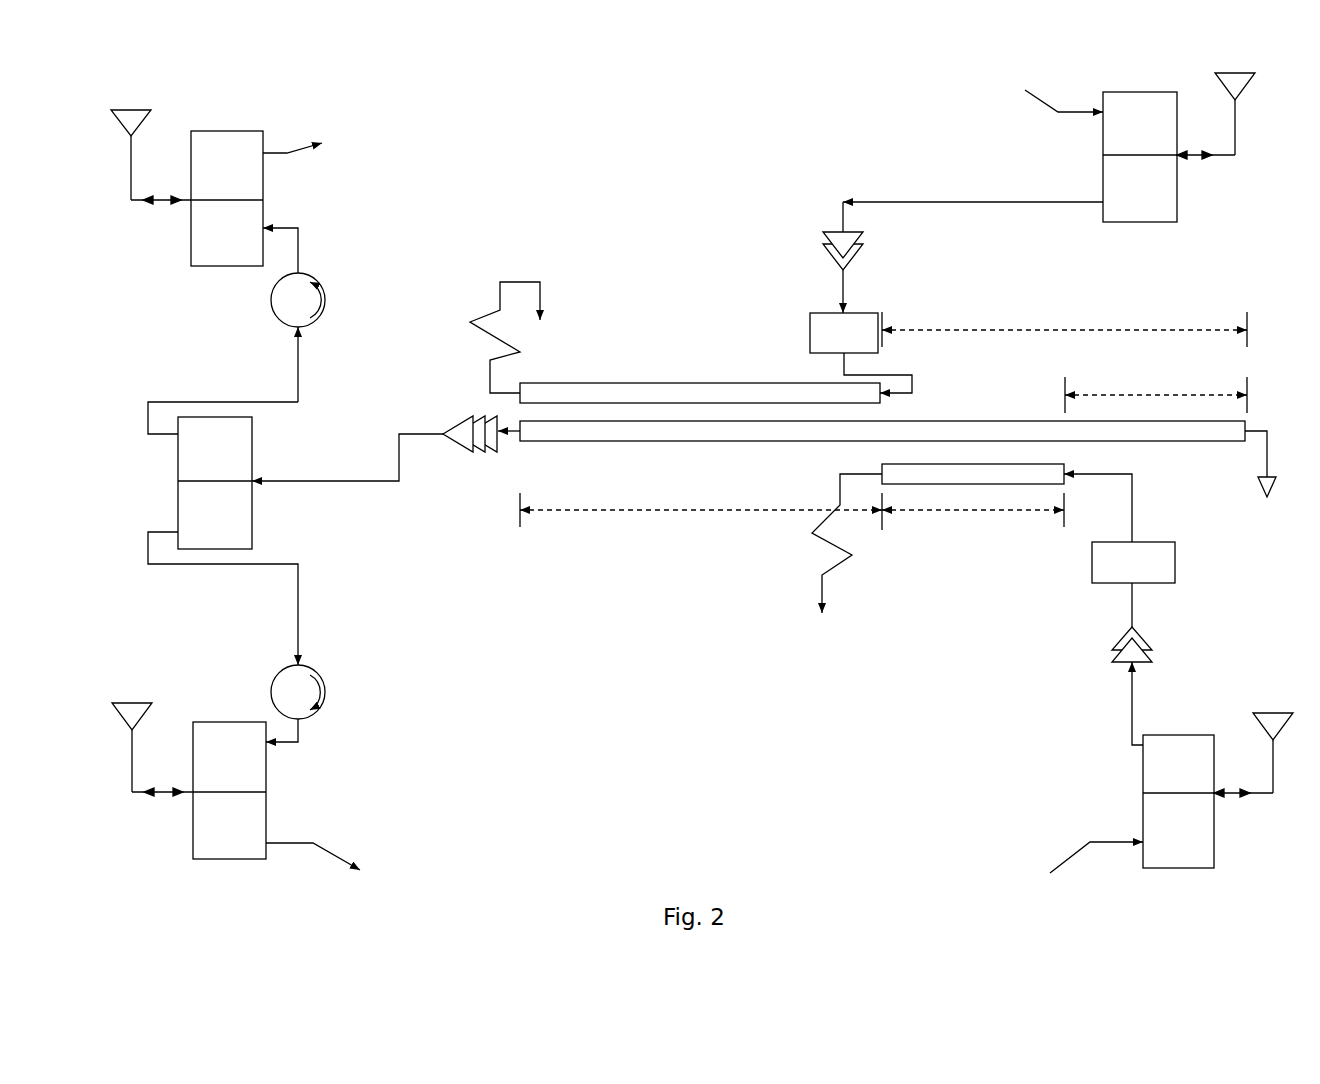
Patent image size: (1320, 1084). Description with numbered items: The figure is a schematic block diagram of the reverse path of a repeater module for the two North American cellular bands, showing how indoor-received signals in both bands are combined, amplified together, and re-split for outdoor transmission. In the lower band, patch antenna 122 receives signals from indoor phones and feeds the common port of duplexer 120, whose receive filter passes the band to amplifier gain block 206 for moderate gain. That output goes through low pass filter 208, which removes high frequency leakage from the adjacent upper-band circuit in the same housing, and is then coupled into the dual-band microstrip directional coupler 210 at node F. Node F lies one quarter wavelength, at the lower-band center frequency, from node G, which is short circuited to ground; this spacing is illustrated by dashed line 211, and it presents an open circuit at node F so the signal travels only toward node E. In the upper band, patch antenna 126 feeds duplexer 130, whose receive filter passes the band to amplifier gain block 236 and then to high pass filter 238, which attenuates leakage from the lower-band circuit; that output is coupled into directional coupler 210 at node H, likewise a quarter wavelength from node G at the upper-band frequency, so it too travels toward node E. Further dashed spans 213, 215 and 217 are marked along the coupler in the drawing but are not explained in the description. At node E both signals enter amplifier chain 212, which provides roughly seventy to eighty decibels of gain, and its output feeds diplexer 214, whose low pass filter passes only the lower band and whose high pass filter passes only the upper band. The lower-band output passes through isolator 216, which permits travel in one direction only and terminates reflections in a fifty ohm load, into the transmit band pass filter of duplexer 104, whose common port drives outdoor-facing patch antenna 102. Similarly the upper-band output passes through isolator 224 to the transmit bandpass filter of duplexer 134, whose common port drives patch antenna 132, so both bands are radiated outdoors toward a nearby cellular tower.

The patch antenna 102 is at (127, 110).
The duplexer 104 is at (253, 138).
The isolator 216 is at (332, 298).
The diplexer 214 is at (173, 477).
The amplifier chain 212 is at (452, 420).
The isolator 224 is at (337, 715).
The patch antenna 132 is at (122, 695).
The duplexer 134 is at (185, 813).
The dual-band microstrip directional coupler 210 is at (733, 375).
The amplifier gain block 206 is at (817, 253).
The low pass filter 208 is at (802, 328).
The dashed line 211 is at (1112, 318).
The coupling length 213 is at (1162, 393).
The coupled transmission line 215 is at (932, 517).
The coupling length 217 is at (587, 513).
The amplifier gain block 236 is at (1105, 647).
The high pass filter 238 is at (1177, 573).
The duplexer 120 is at (1182, 178).
The patch antenna 122 is at (1250, 88).
The patch antenna 126 is at (1282, 707).
The duplexer 130 is at (1220, 820).